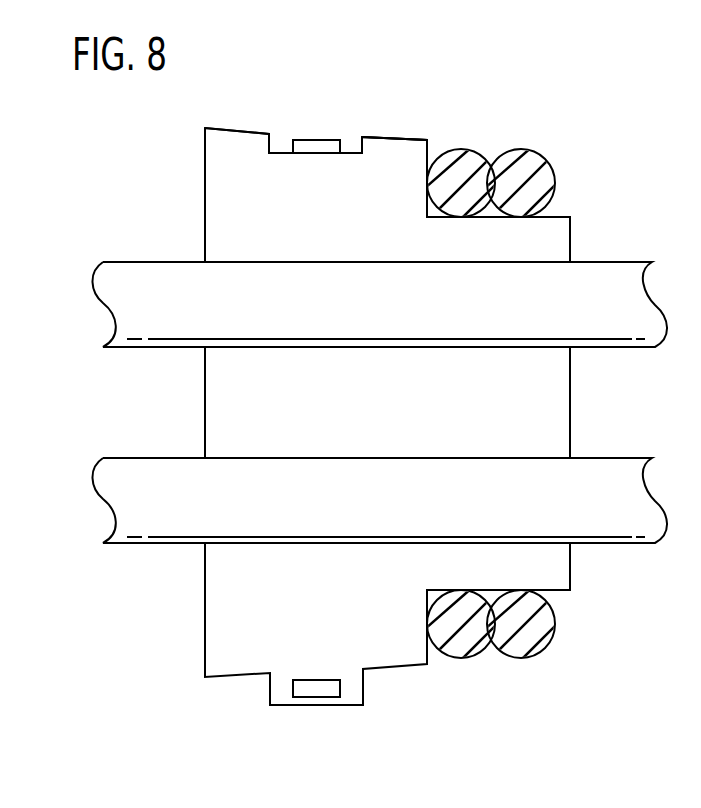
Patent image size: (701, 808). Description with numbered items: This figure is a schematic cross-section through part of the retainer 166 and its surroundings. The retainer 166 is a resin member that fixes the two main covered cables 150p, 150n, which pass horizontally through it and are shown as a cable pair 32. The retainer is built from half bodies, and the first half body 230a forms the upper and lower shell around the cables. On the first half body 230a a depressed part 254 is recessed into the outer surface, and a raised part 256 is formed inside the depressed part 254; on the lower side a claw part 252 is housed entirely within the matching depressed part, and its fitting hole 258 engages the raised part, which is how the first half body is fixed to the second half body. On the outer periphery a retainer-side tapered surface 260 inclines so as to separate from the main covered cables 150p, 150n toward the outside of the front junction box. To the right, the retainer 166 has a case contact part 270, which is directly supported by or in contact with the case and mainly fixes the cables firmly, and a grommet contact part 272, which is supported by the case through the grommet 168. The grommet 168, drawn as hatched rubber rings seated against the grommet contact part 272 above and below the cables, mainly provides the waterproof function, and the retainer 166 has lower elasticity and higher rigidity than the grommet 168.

The conductive lines (pair) 32 is at (62, 368).
The main covered cable 150p is at (144, 345).
The main covered cable 150n is at (133, 470).
The retainer 166 is at (496, 83).
The grommet 168 is at (545, 173).
The first half body 230a is at (205, 158).
The claw part 252 is at (287, 700).
The depressed part 254 is at (273, 148).
The raised part 256 is at (317, 143).
The fitting hole 258 is at (327, 690).
The retainer-side tapered surface 260 is at (223, 127).
The case contact part 270 is at (382, 137).
The grommet contact part 272 is at (483, 216).